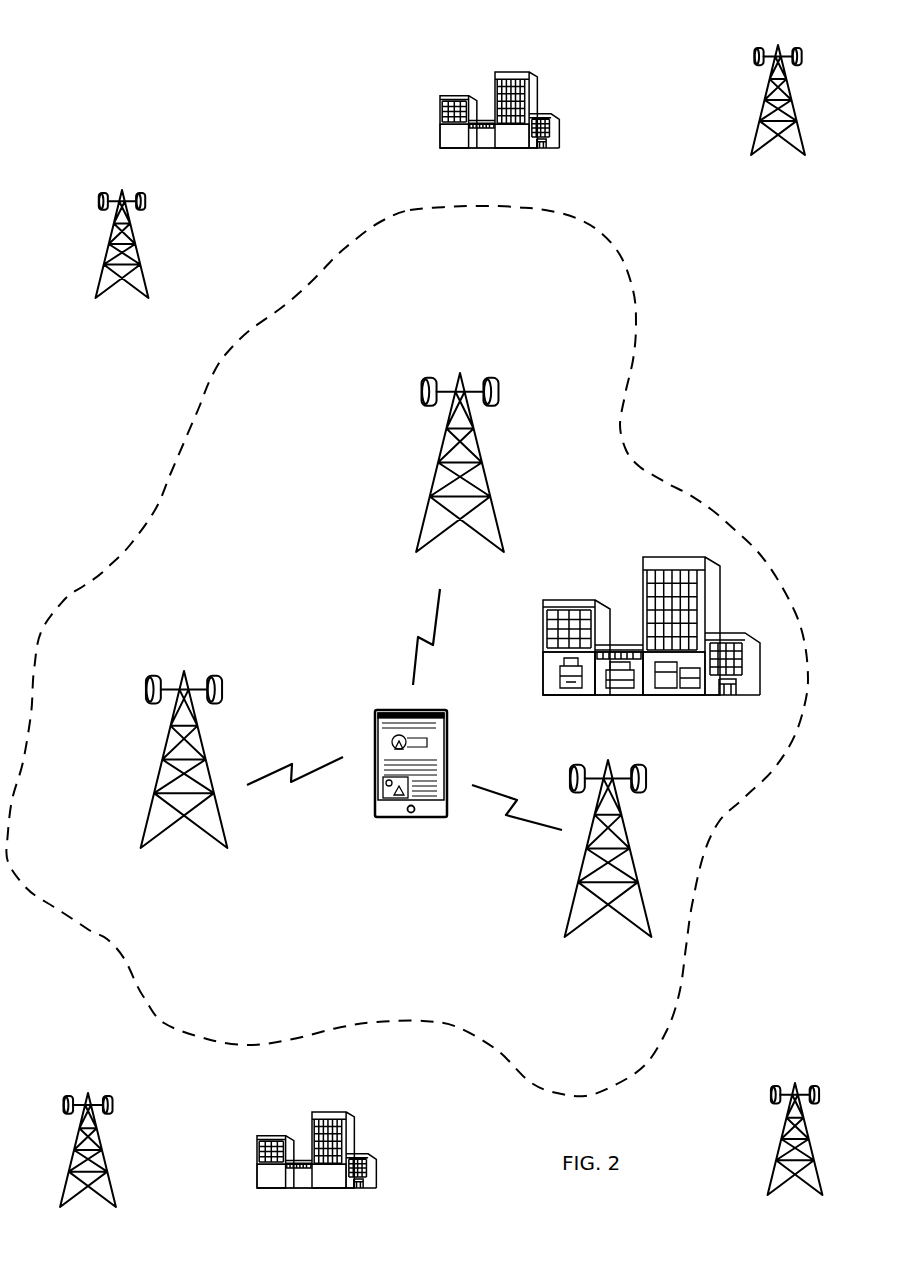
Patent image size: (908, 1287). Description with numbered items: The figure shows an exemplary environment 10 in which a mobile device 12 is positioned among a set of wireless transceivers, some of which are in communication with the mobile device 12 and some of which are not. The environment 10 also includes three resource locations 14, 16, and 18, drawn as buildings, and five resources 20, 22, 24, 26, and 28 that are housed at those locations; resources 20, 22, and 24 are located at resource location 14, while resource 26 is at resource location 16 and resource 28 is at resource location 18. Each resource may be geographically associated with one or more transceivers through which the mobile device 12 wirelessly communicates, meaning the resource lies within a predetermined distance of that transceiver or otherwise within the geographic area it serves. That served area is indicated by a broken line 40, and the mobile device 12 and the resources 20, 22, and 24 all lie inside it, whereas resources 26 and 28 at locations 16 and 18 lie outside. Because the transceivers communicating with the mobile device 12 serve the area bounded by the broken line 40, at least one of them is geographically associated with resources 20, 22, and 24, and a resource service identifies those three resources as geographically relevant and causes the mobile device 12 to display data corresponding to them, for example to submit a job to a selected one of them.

The environment 10 is at (151, 92).
The mobile device 12 is at (392, 818).
The resource location 14 is at (561, 600).
The resource location 16 is at (517, 73).
The resource location 18 is at (328, 1112).
The resource 20 is at (567, 694).
The resource 22 is at (622, 692).
The resource 24 is at (680, 693).
The resource 26 is at (508, 130).
The resource 28 is at (268, 1178).
The broken line 40 is at (684, 460).